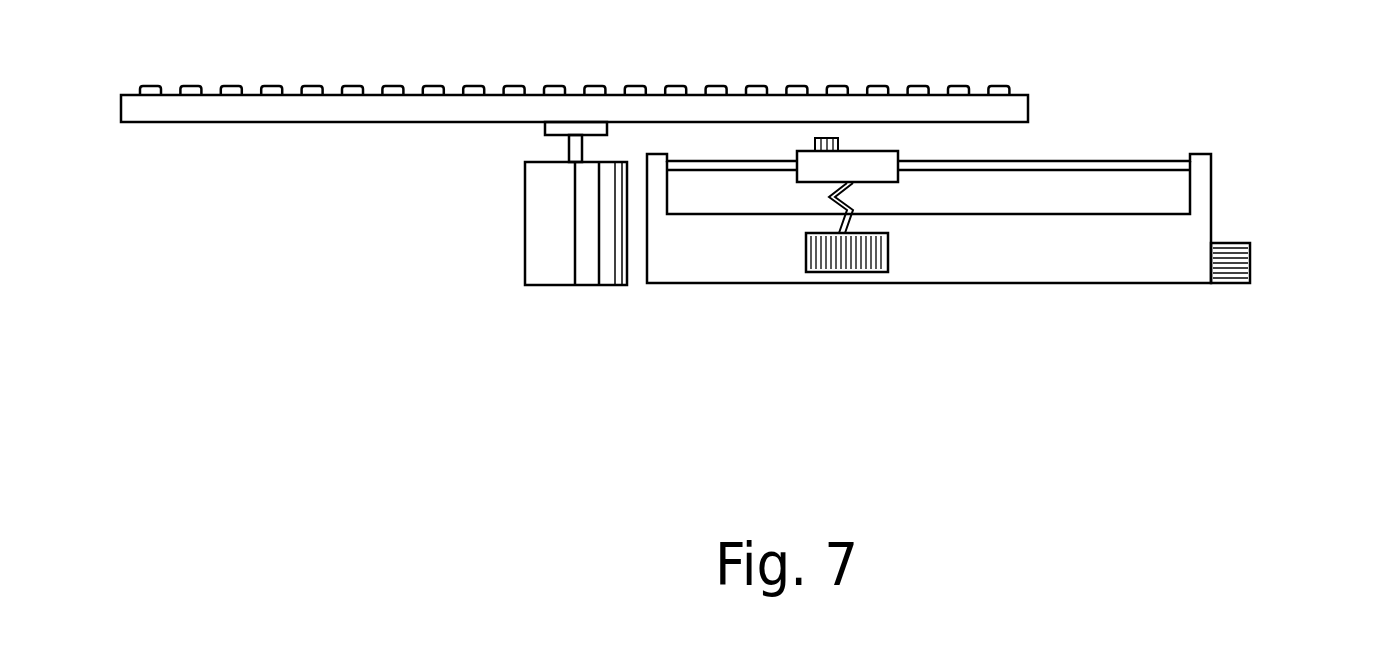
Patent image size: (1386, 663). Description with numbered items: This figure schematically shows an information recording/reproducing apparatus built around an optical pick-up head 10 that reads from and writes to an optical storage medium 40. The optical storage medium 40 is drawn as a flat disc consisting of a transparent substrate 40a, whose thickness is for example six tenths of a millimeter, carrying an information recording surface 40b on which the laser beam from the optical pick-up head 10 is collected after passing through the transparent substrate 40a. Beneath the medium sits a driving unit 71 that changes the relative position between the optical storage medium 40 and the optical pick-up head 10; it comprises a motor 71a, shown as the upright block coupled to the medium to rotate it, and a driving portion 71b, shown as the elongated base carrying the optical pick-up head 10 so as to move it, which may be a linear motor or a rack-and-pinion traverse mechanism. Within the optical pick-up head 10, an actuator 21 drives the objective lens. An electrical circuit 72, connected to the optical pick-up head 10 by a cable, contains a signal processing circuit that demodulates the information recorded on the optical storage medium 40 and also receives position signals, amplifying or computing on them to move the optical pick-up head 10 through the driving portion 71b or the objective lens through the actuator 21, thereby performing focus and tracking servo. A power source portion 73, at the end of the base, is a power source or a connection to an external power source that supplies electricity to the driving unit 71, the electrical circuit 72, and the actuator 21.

The optical storage medium 40 is at (657, 93).
The transparent substrate 40a is at (1028, 112).
The information recording surface 40b is at (1010, 91).
The driving unit 71 is at (868, 295).
The motor 71a is at (587, 285).
The driving portion 71b is at (687, 283).
The optical pick-up head 10 is at (887, 183).
The actuator 21 is at (813, 140).
The electrical circuit 72 is at (867, 272).
The power source portion 73 is at (1250, 262).